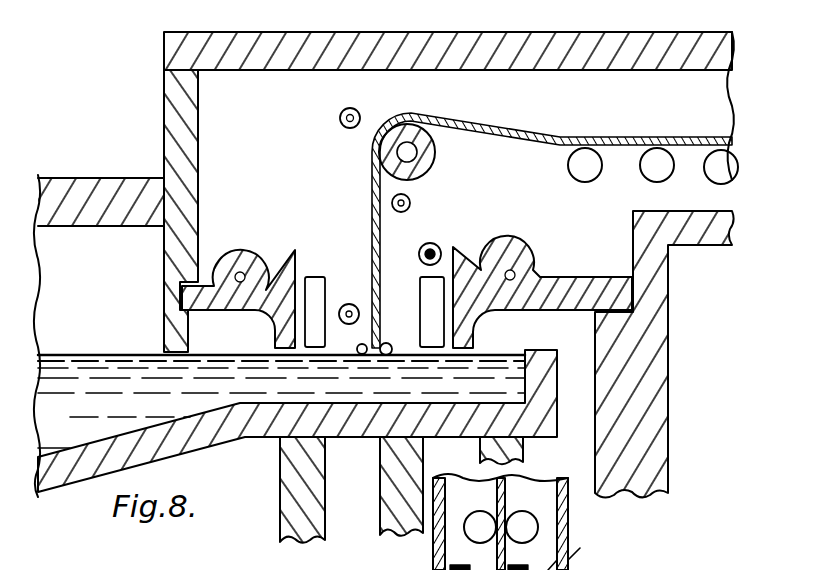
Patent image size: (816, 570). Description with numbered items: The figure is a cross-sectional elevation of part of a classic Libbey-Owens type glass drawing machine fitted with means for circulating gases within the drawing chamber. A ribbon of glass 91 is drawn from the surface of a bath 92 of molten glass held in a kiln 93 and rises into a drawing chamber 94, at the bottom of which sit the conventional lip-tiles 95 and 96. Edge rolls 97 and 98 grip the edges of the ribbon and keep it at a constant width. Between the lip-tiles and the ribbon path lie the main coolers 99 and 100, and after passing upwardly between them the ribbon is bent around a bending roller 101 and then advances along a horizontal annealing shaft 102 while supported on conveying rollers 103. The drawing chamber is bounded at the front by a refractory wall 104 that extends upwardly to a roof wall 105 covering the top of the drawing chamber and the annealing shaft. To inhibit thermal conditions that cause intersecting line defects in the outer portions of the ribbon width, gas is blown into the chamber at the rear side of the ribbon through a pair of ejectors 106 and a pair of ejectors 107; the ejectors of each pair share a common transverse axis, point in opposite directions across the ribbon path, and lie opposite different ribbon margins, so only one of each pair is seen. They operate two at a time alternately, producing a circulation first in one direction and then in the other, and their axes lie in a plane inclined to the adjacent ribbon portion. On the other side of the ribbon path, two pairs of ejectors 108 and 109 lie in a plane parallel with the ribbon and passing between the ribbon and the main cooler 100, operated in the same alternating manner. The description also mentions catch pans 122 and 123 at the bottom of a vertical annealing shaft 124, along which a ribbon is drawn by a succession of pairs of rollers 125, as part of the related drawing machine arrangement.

The ribbon of glass 91 is at (371, 202).
The bath of molten glass 92 is at (386, 401).
The kiln 93 is at (436, 437).
The drawing chamber 94 is at (249, 147).
The lip-tile 95 is at (507, 250).
The lip-tile 96 is at (222, 268).
The edge roll 97 is at (382, 346).
The edge roll 98 is at (347, 345).
The main cooler 99 is at (430, 300).
The main cooler 100 is at (312, 292).
The bending roller 101 is at (423, 153).
The horizontal annealing shaft 102 is at (661, 110).
The conveying rollers 103 is at (723, 168).
The refractory wall 104 is at (182, 98).
The roof wall 105 is at (318, 50).
The ejectors 106 is at (412, 203).
The ejectors 107 is at (439, 250).
The ejectors 108 is at (355, 114).
The ejectors 109 is at (347, 304).
The catch pan 122 is at (466, 569).
The catch pan 123 is at (562, 566).
The vertical annealing shaft 124 is at (547, 503).
The pairs of rollers 125 is at (527, 529).